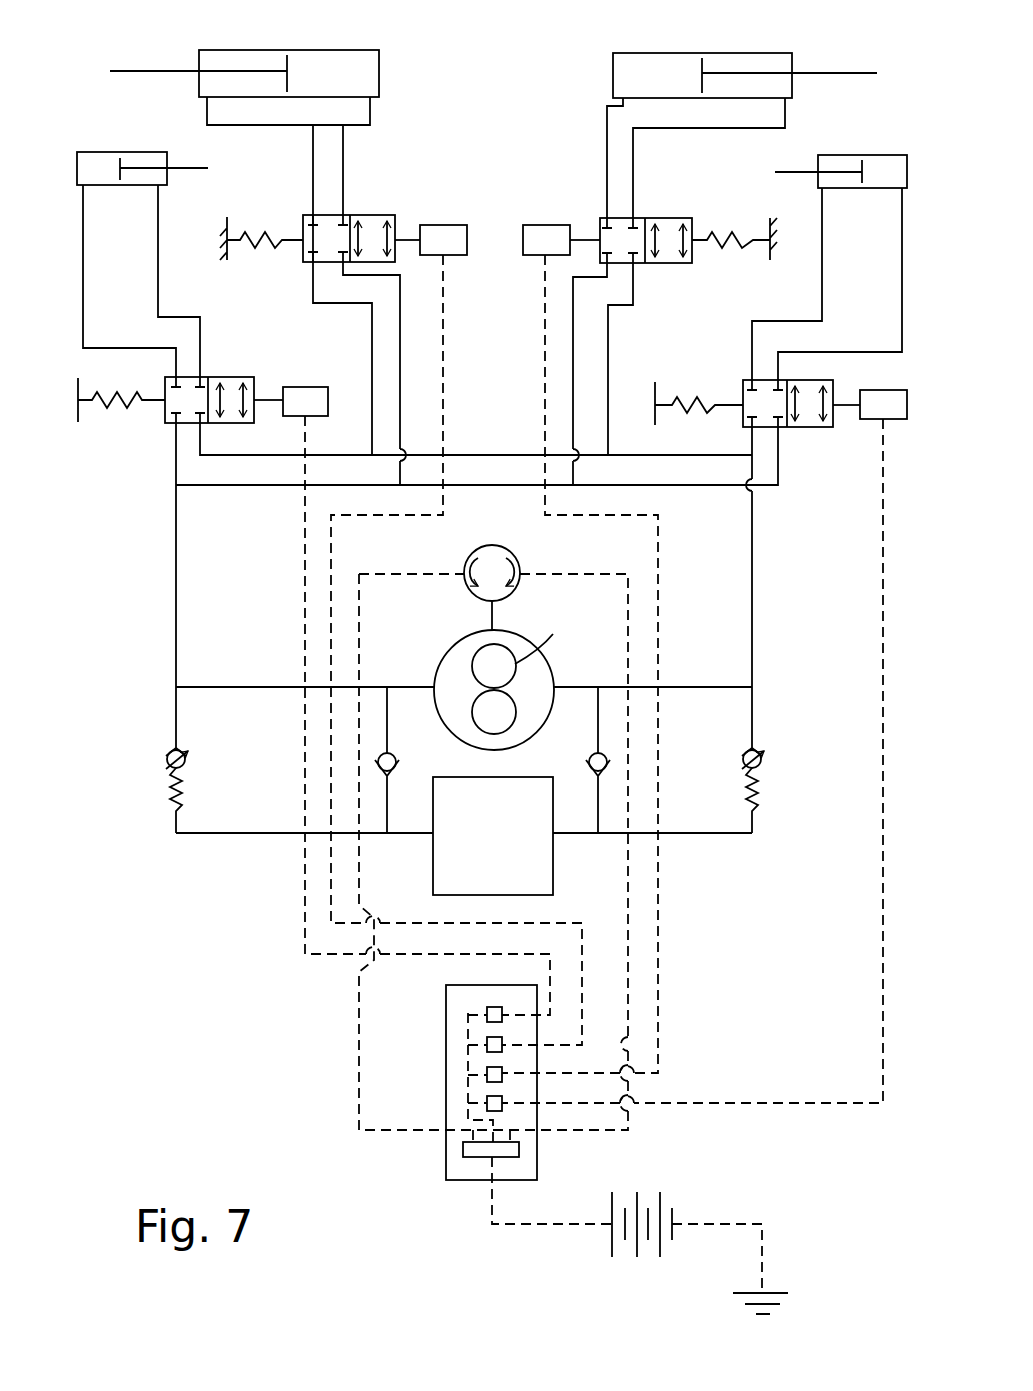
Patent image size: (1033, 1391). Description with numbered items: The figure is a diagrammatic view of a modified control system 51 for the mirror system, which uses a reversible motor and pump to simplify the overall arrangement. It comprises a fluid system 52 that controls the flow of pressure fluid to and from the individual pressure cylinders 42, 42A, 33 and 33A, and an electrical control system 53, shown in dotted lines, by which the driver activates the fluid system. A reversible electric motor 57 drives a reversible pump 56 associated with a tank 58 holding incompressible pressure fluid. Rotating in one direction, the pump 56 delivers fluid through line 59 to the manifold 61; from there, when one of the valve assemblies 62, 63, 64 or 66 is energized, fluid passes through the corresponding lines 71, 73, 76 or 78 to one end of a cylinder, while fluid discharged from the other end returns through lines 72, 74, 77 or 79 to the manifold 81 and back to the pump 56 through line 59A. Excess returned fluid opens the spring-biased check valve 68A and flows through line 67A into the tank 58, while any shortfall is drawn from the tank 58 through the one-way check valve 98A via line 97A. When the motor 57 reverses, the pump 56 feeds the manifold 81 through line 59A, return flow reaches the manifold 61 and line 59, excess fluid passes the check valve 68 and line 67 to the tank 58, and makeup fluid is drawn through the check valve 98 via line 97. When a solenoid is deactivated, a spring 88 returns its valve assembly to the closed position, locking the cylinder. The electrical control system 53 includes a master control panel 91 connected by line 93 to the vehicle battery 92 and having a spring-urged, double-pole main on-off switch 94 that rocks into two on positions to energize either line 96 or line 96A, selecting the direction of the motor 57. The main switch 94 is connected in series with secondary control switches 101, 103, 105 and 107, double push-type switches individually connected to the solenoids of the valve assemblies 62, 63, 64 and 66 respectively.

The pressure cylinder 42 is at (340, 48).
The pressure cylinder 42A is at (676, 48).
The fluid cylinder 33 is at (110, 150).
The fluid cylinder 33A is at (848, 152).
The line 74 is at (378, 102).
The line 73 is at (313, 157).
The line 76 is at (607, 125).
The line 77 is at (636, 152).
The line 71 is at (83, 262).
The line 72 is at (172, 282).
The line 78 is at (822, 295).
The line 79 is at (902, 295).
The valve assembly 63 is at (372, 212).
The valve assembly 64 is at (672, 215).
The valve assembly 62 is at (237, 375).
The valve assembly 66 is at (802, 432).
The spring 88 is at (112, 420).
The manifold 81 is at (505, 452).
The manifold 61 is at (195, 487).
The fluid system 52 is at (155, 592).
The reversible electric motor 57 is at (516, 556).
The reversible pump 56 is at (465, 641).
The line 59 is at (252, 687).
The line 59A is at (700, 687).
The spring-biased check valve 68 is at (185, 748).
The spring-biased check valve 68A is at (762, 750).
The line 97 is at (402, 733).
The line 97A is at (598, 738).
The one-way check valve 98 is at (396, 758).
The one-way check valve 98A is at (589, 758).
The line 67 is at (258, 833).
The line 67A is at (693, 836).
The tank 58 is at (553, 880).
The line 96 is at (358, 1058).
The line 96A is at (630, 935).
The master control panel 91 is at (537, 1157).
The secondary control switch 101 is at (488, 1010).
The secondary control switch 103 is at (490, 1042).
The secondary control switch 105 is at (490, 1072).
The secondary control switch 107 is at (490, 1100).
The main on-off switch 94 is at (482, 1152).
The electrical control system 53 is at (423, 1155).
The control system 51 is at (177, 920).
The vehicle battery 92 is at (612, 1244).
The line 93 is at (553, 1226).